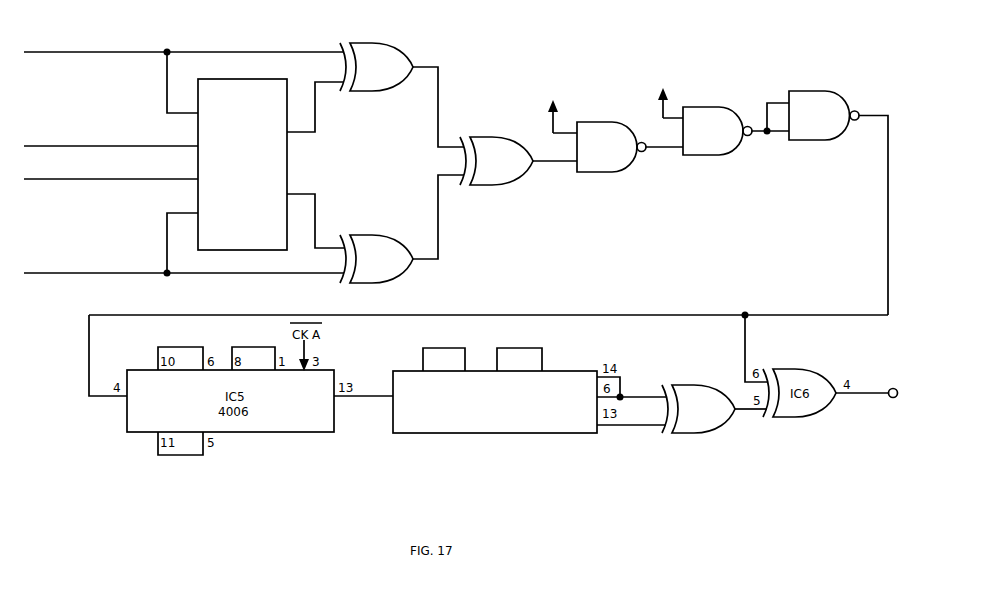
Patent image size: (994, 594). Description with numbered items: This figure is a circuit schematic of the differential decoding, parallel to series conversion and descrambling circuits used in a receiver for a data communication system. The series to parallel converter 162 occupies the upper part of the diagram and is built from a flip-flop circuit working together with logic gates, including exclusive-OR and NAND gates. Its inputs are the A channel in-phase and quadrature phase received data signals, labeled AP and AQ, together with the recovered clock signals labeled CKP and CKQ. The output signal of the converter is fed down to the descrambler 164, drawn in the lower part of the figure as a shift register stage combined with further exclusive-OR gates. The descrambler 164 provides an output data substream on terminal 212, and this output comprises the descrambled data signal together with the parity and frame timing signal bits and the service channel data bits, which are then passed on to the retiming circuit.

The series to parallel converter 162 is at (483, 58).
The descrambler 164 is at (394, 455).
The terminal 212 is at (889, 398).